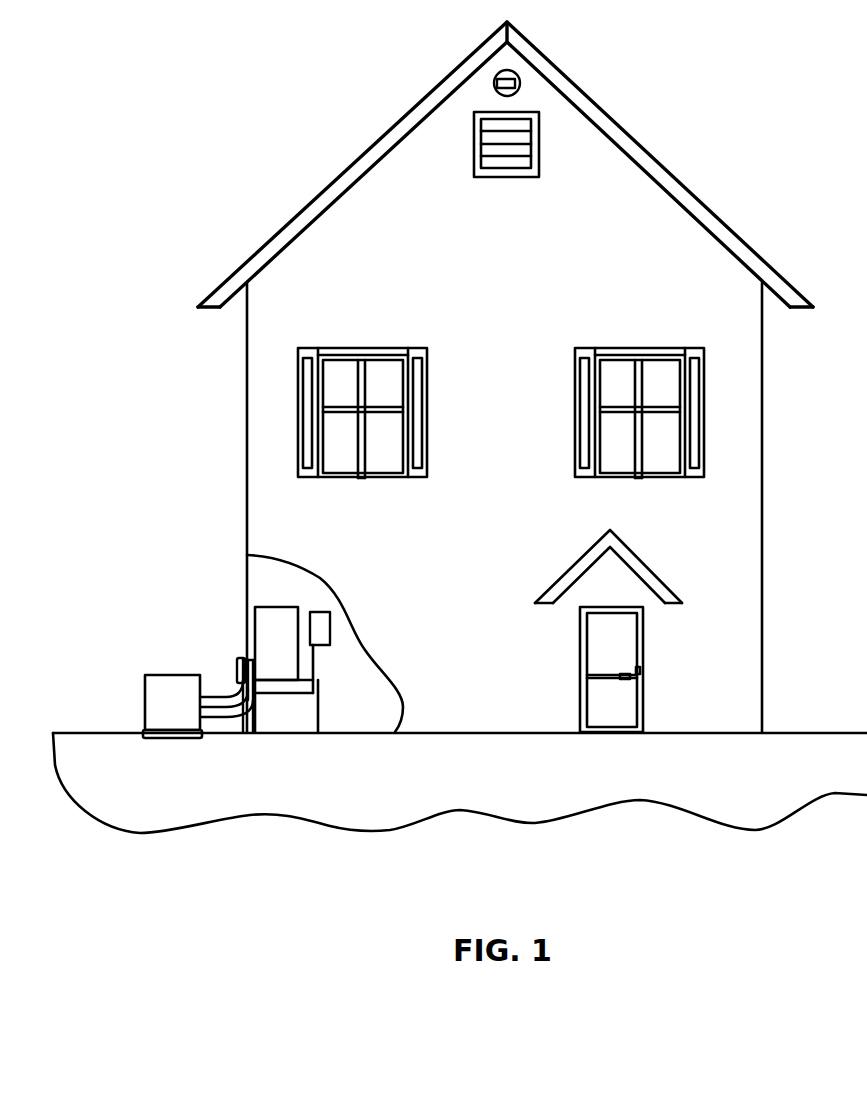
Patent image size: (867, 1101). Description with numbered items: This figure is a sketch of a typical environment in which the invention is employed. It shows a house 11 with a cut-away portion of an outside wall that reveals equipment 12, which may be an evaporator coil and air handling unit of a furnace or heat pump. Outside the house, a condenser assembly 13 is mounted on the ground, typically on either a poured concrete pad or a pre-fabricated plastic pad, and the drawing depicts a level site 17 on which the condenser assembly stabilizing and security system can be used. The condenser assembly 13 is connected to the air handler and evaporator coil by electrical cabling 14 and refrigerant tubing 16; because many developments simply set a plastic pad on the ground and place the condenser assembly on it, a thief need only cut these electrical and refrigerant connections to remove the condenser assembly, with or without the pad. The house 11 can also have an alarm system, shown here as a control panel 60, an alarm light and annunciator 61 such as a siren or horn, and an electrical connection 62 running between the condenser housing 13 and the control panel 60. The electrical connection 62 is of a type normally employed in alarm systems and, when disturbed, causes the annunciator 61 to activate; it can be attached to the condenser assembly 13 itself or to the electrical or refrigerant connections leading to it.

The house 11 is at (733, 555).
The equipment 12 is at (275, 660).
The condenser assembly 13 is at (168, 698).
The electrical cabling 14 is at (213, 696).
The refrigerant tubing 16 is at (218, 722).
The level site 17 is at (133, 730).
The control panel 60 is at (327, 613).
The annunciator 61 is at (512, 70).
The electrical connection 62 is at (228, 700).